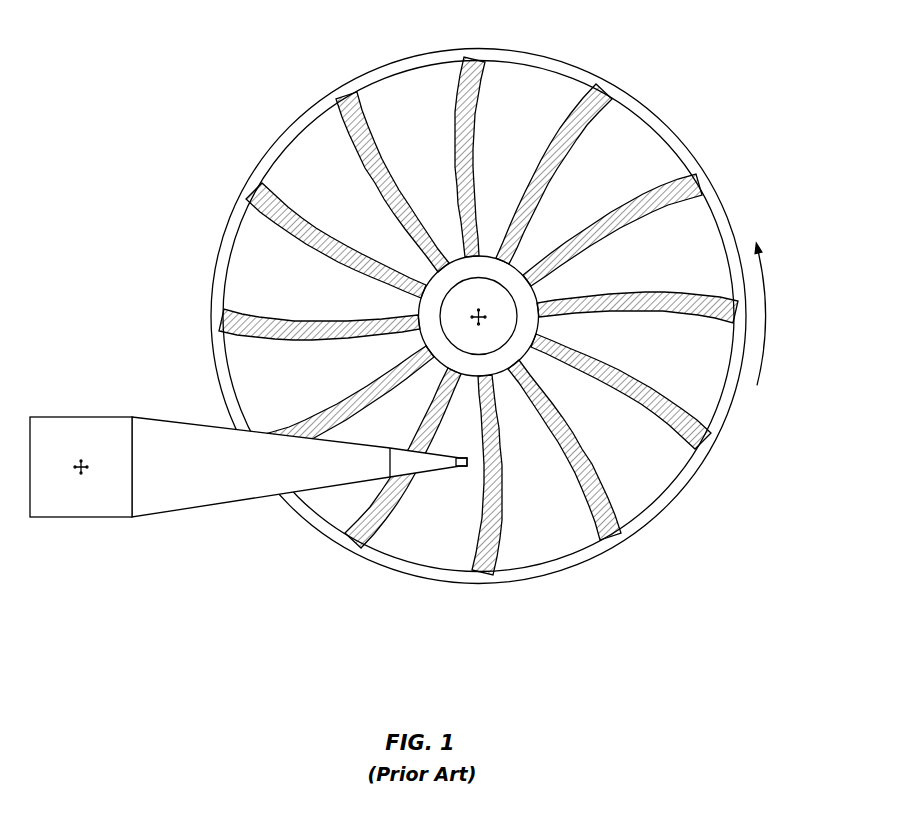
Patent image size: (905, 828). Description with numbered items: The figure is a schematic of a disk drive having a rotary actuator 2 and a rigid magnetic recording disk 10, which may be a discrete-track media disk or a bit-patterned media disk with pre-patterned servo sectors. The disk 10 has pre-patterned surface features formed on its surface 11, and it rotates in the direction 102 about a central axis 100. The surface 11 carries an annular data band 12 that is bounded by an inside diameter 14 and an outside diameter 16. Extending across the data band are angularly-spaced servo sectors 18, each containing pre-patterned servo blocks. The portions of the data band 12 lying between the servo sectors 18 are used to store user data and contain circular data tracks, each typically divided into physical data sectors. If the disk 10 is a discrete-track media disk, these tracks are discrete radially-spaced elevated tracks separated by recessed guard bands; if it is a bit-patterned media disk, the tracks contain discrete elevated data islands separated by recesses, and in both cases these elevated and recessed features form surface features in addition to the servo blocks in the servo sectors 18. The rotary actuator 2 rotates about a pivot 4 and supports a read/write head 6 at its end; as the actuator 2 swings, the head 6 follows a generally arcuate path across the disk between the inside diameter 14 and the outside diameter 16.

The rotary actuator 2 is at (245, 475).
The pivot 4 is at (80, 460).
The read/write head 6 is at (462, 468).
The rigid magnetic recording disk 10 is at (707, 173).
The surface 11 is at (645, 152).
The annular data band 12 is at (413, 305).
The inside diameter 14 is at (514, 270).
The outside diameter 16 is at (533, 64).
The servo sectors 18 is at (478, 319).
The central axis 100 is at (482, 318).
The direction of rotation 102 is at (763, 290).